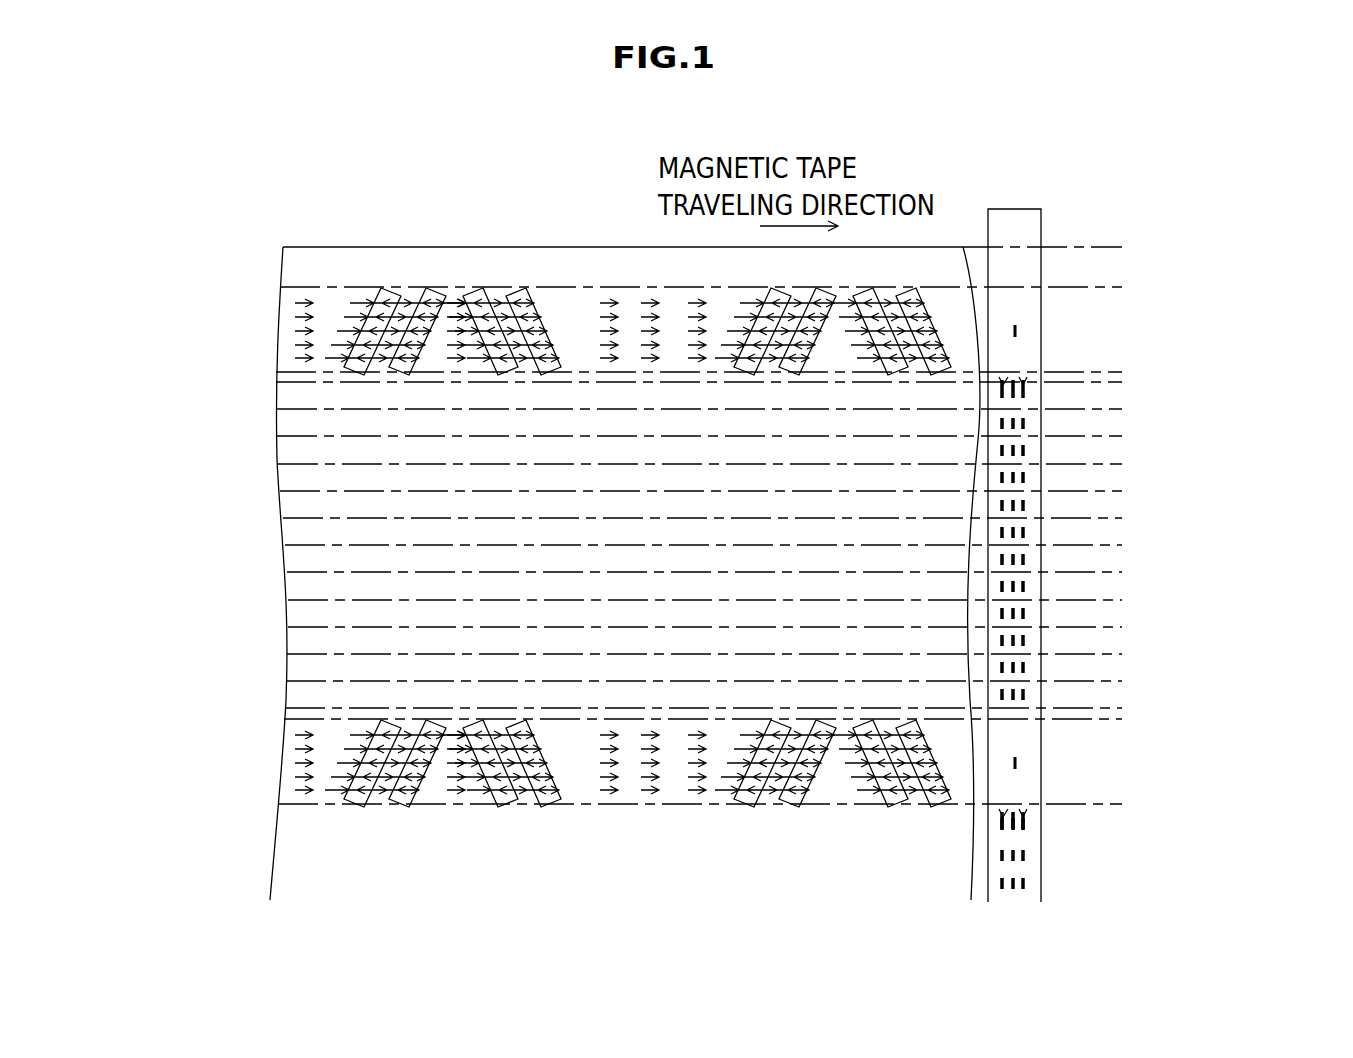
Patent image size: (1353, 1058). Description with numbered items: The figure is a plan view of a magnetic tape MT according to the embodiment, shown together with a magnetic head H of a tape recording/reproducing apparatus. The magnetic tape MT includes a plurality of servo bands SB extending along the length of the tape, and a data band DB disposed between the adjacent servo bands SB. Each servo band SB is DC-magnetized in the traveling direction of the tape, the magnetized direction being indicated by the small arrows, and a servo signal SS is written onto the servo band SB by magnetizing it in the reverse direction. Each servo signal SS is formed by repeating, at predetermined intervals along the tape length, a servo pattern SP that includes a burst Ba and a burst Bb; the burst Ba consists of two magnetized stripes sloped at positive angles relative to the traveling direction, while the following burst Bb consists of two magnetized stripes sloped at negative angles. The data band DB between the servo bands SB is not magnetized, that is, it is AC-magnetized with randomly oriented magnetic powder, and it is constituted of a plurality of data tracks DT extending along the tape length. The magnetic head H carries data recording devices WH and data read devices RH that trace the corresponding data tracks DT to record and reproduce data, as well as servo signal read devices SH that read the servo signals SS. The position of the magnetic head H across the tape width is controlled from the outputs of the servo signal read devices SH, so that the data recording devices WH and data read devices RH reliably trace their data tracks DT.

The magnetic tape MT is at (332, 247).
The servo pattern SP is at (647, 485).
The burst Ba is at (446, 270).
The burst Bb is at (706, 507).
The magnetic head H is at (1008, 209).
The servo band SB is at (262, 804).
The servo signal SS is at (977, 321).
The servo signal read device SH is at (1016, 331).
The data recording device WH is at (1005, 385).
The data track DT is at (1067, 475).
The data band DB is at (262, 382).
The data read device RH is at (1020, 716).